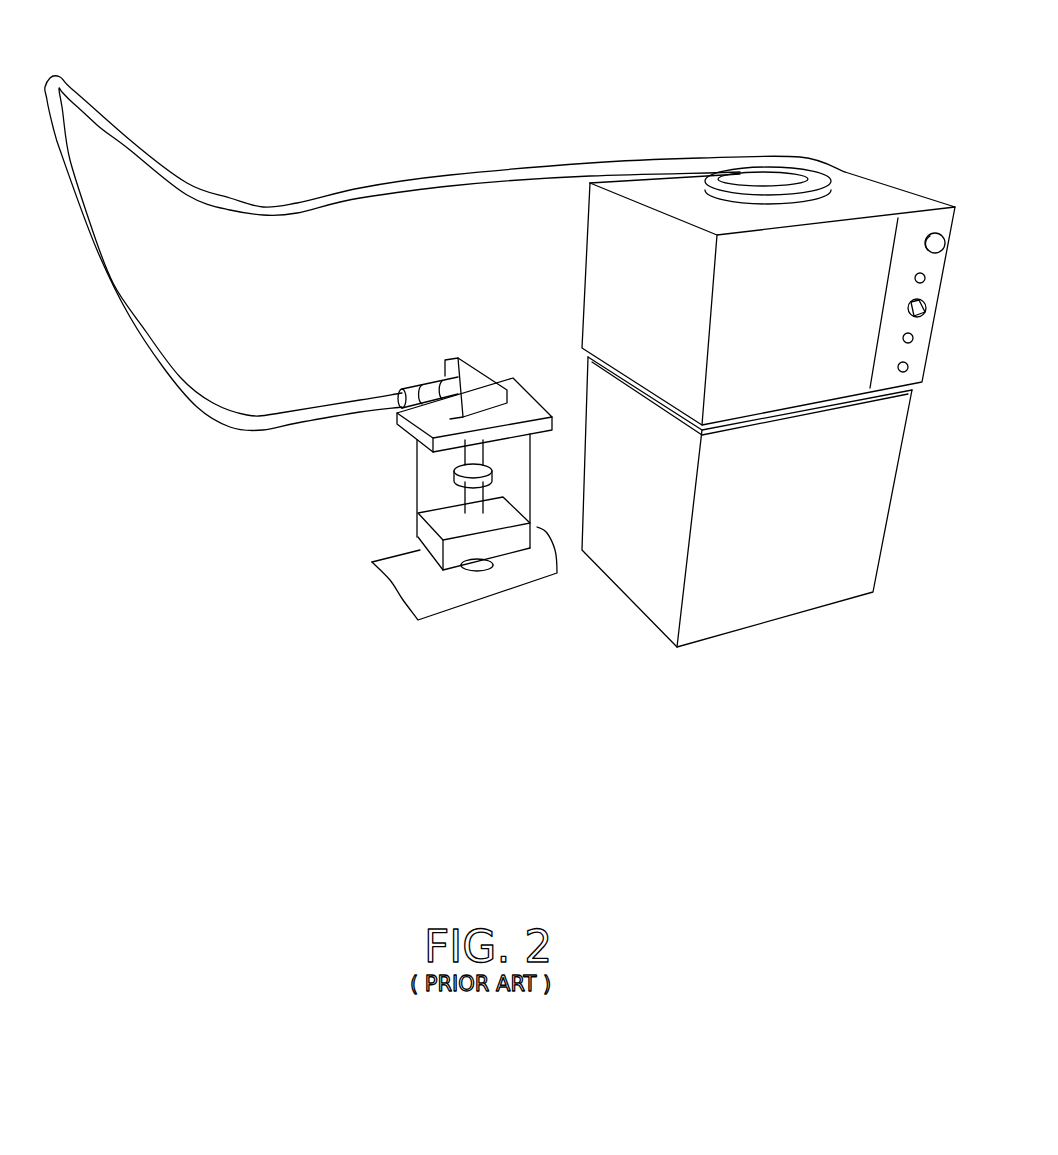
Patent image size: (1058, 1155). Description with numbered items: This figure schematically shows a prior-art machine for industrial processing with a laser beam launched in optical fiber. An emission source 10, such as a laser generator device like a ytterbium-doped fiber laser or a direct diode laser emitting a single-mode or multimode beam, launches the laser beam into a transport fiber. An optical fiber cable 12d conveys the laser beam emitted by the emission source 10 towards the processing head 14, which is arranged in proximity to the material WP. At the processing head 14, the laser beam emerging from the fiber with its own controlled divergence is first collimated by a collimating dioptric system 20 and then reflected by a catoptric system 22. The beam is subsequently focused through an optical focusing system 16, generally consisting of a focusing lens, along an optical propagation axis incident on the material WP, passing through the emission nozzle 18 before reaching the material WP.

The emission source 10 is at (870, 160).
The optical fiber cable 12d is at (437, 178).
The processing head 14 is at (366, 453).
The optical focusing system 16 is at (460, 478).
The emission nozzle 18 is at (477, 573).
The collimating dioptric system 20 is at (428, 378).
The catoptric system 22 is at (493, 376).
The material WP is at (432, 602).